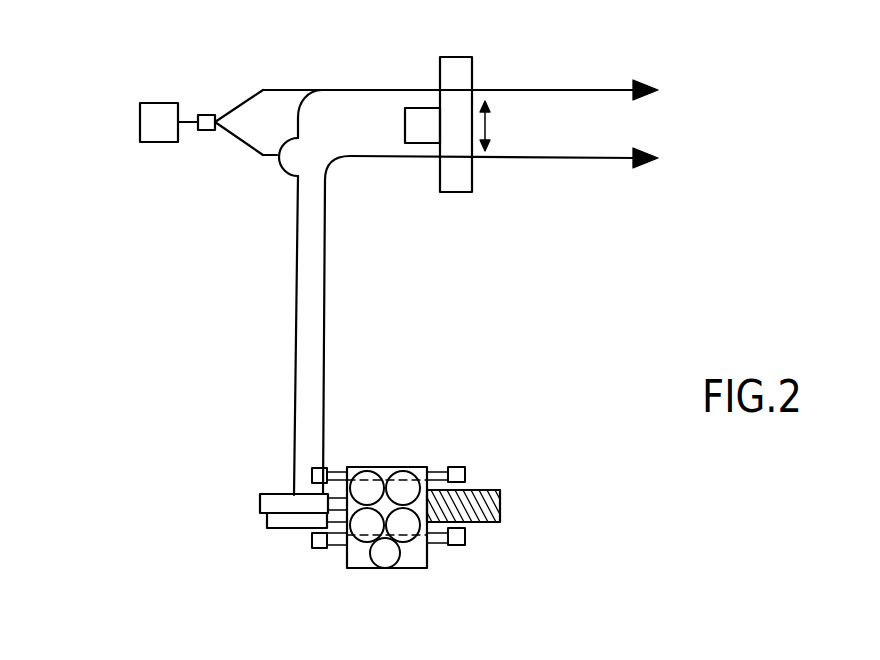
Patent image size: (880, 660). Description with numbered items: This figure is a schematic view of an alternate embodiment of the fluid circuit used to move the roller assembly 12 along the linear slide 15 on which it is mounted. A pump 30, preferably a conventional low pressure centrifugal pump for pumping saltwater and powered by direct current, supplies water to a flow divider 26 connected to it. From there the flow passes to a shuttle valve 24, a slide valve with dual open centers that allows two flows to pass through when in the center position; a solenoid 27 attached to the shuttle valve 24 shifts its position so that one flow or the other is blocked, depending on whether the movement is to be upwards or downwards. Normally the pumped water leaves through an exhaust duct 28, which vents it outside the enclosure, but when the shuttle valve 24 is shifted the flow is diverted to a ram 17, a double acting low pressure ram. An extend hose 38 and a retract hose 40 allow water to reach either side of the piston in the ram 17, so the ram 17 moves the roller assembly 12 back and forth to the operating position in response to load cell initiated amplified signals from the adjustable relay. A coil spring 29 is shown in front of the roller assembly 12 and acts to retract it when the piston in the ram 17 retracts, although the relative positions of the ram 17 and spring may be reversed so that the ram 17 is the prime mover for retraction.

The roller assembly 12 is at (388, 470).
The linear slide 15 is at (440, 472).
The ram 17 is at (262, 505).
The shuttle valve 24 is at (470, 80).
The flow divider 26 is at (210, 124).
The solenoid 27 is at (418, 117).
The exhaust duct 28 is at (595, 90).
The coil spring 29 is at (492, 489).
The pump 30 is at (147, 122).
The extend hose 38 is at (295, 360).
The retract hose 40 is at (325, 345).